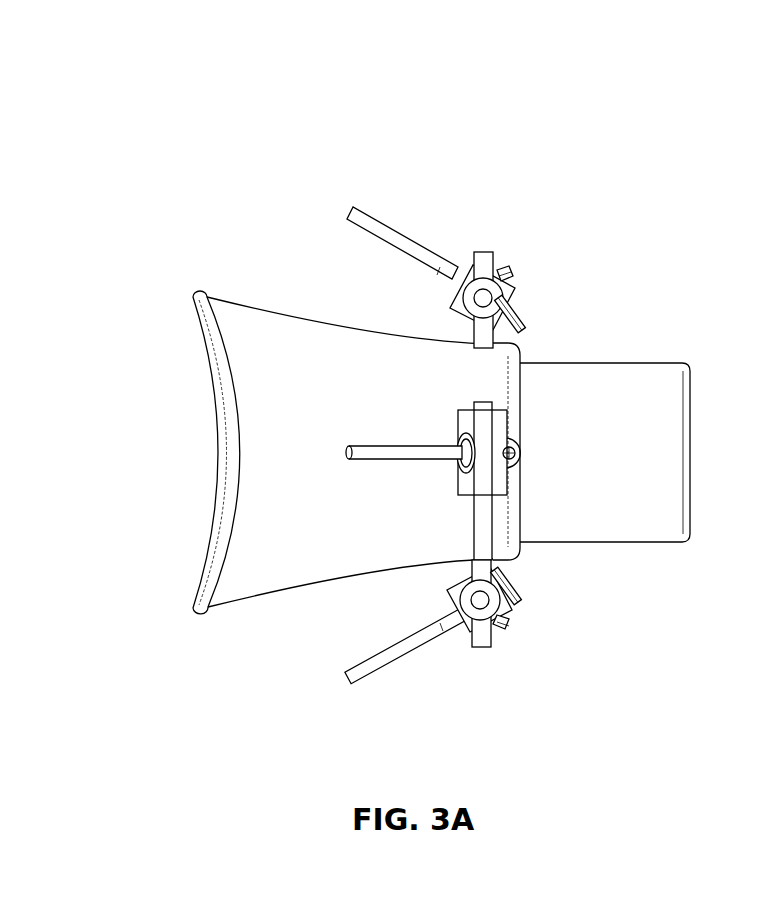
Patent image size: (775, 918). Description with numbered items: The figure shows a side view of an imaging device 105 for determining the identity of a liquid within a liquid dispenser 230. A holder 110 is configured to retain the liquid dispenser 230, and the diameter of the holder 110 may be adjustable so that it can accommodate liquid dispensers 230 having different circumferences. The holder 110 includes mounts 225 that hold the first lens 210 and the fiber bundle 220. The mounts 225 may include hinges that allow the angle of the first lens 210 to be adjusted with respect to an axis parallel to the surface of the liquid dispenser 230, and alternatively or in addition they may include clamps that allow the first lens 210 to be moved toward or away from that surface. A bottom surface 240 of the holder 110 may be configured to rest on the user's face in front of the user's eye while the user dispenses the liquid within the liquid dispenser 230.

The imaging device 105 is at (248, 142).
The holder 110 is at (332, 587).
The first lens 210 is at (517, 310).
The fiber bundle 220 is at (415, 245).
The mounts 225 is at (507, 288).
The liquid dispenser 230 is at (597, 553).
The bottom surface 240 is at (217, 403).